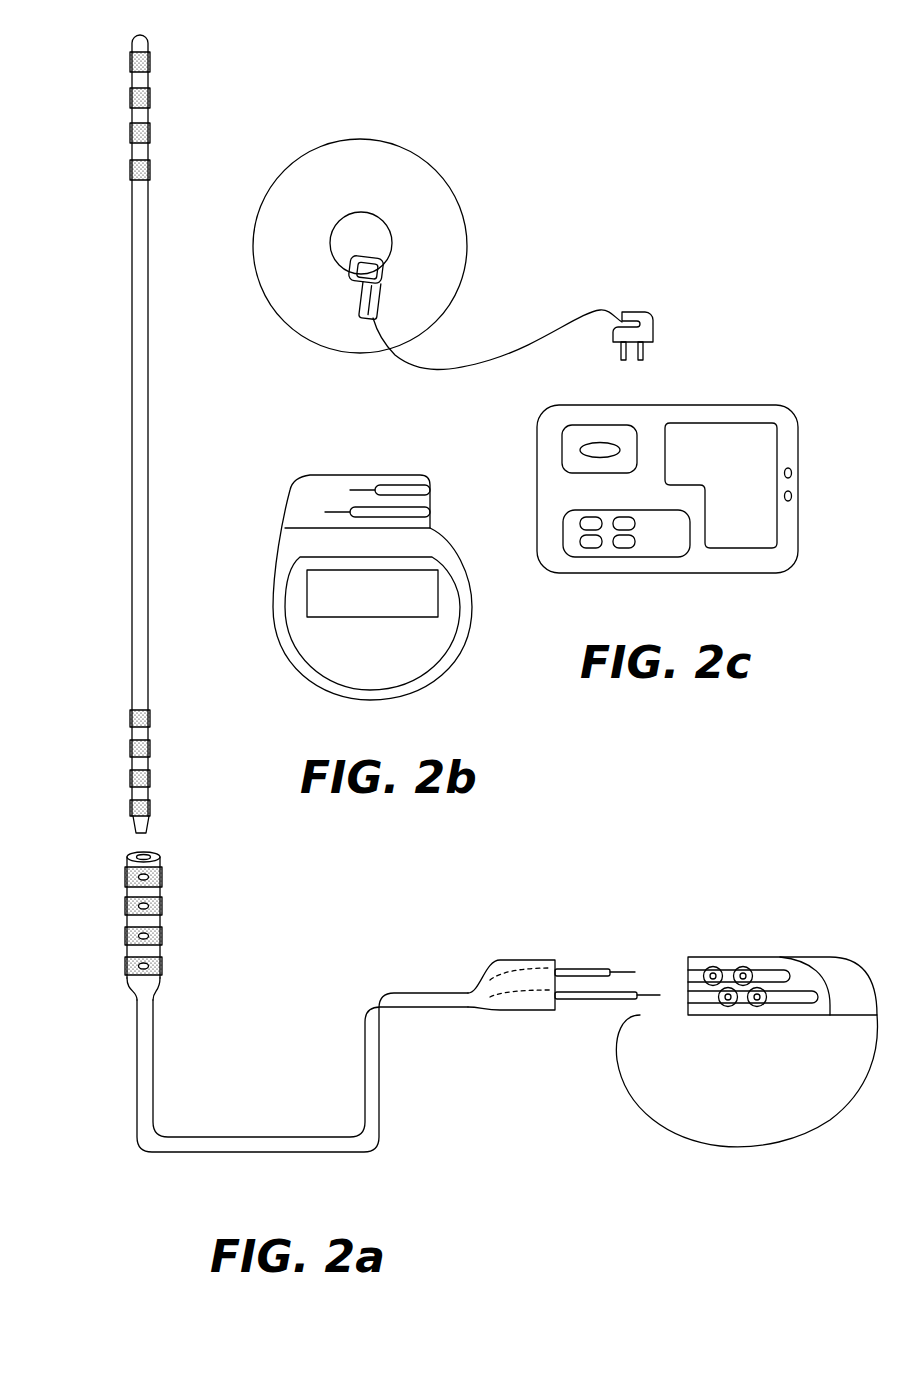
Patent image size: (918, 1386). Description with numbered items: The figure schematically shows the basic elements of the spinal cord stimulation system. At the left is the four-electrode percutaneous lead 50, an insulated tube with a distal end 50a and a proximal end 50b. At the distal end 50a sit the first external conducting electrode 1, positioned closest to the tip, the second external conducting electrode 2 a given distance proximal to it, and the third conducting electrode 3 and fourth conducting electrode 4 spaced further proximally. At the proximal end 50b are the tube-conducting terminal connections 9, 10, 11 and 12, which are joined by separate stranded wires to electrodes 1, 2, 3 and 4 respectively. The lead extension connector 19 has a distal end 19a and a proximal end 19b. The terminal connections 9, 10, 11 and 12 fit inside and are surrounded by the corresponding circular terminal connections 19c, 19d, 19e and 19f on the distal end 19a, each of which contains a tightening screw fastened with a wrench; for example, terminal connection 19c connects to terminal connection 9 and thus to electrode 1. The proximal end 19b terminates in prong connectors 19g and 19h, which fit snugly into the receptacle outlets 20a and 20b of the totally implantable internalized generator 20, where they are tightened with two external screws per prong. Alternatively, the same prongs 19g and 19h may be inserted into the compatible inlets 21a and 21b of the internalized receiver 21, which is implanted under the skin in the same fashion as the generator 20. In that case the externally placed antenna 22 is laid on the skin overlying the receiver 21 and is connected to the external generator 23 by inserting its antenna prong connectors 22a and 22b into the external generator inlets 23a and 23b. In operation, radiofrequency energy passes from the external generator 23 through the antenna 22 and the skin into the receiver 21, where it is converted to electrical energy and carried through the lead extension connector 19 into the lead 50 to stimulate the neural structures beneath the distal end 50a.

In FIG. 2a, the first external conducting electrode 1 is at (150, 64).
In FIG. 2a, the second external conducting electrode 2 is at (150, 100).
In FIG. 2a, the third conducting electrode 3 is at (150, 135).
In FIG. 2a, the fourth conducting electrode 4 is at (150, 172).
In FIG. 2a, the tube-conducting terminal connection 9 is at (150, 718).
In FIG. 2a, the tube-conducting terminal connection 10 is at (150, 749).
In FIG. 2a, the tube-conducting terminal connection 11 is at (150, 779).
In FIG. 2a, the tube-conducting terminal connection 12 is at (150, 808).
In FIG. 2a, the four-electrode percutaneous lead 50 is at (131, 430).
In FIG. 2a, the distal end 50a is at (124, 101).
In FIG. 2a, the proximal end 50b is at (123, 781).
In FIG. 2a, the lead extension connector 19 is at (268, 1152).
In FIG. 2a, the distal end of lead extension connector 19a is at (121, 923).
In FIG. 2a, the proximal end of lead extension connector 19b is at (533, 960).
In FIG. 2a, the circular terminal connection 19c is at (162, 877).
In FIG. 2a, the circular terminal connection 19d is at (162, 907).
In FIG. 2a, the circular terminal connection 19e is at (162, 937).
In FIG. 2a, the circular terminal connection 19f is at (162, 967).
In FIG. 2a, the prong connector 19g is at (605, 968).
In FIG. 2a, the prong connector 19h is at (615, 999).
In FIG. 2a, the internalized generator 20 is at (752, 1148).
In FIG. 2a, the receptacle outlet 20a is at (688, 975).
In FIG. 2a, the receptacle outlet 20b is at (688, 997).
In FIG. 2b, the internalized receiver 21 is at (378, 700).
In FIG. 2b, the inlet 21a is at (430, 490).
In FIG. 2b, the inlet 21b is at (430, 512).
In FIG. 2a, the antenna 22 is at (330, 350).
In FIG. 2a, the antenna prong connector 22a is at (623, 360).
In FIG. 2a, the antenna prong connector 22b is at (643, 360).
In FIG. 2c, the external generator 23 is at (696, 573).
In FIG. 2c, the external generator inlet 23a is at (792, 473).
In FIG. 2c, the external generator inlet 23b is at (792, 497).